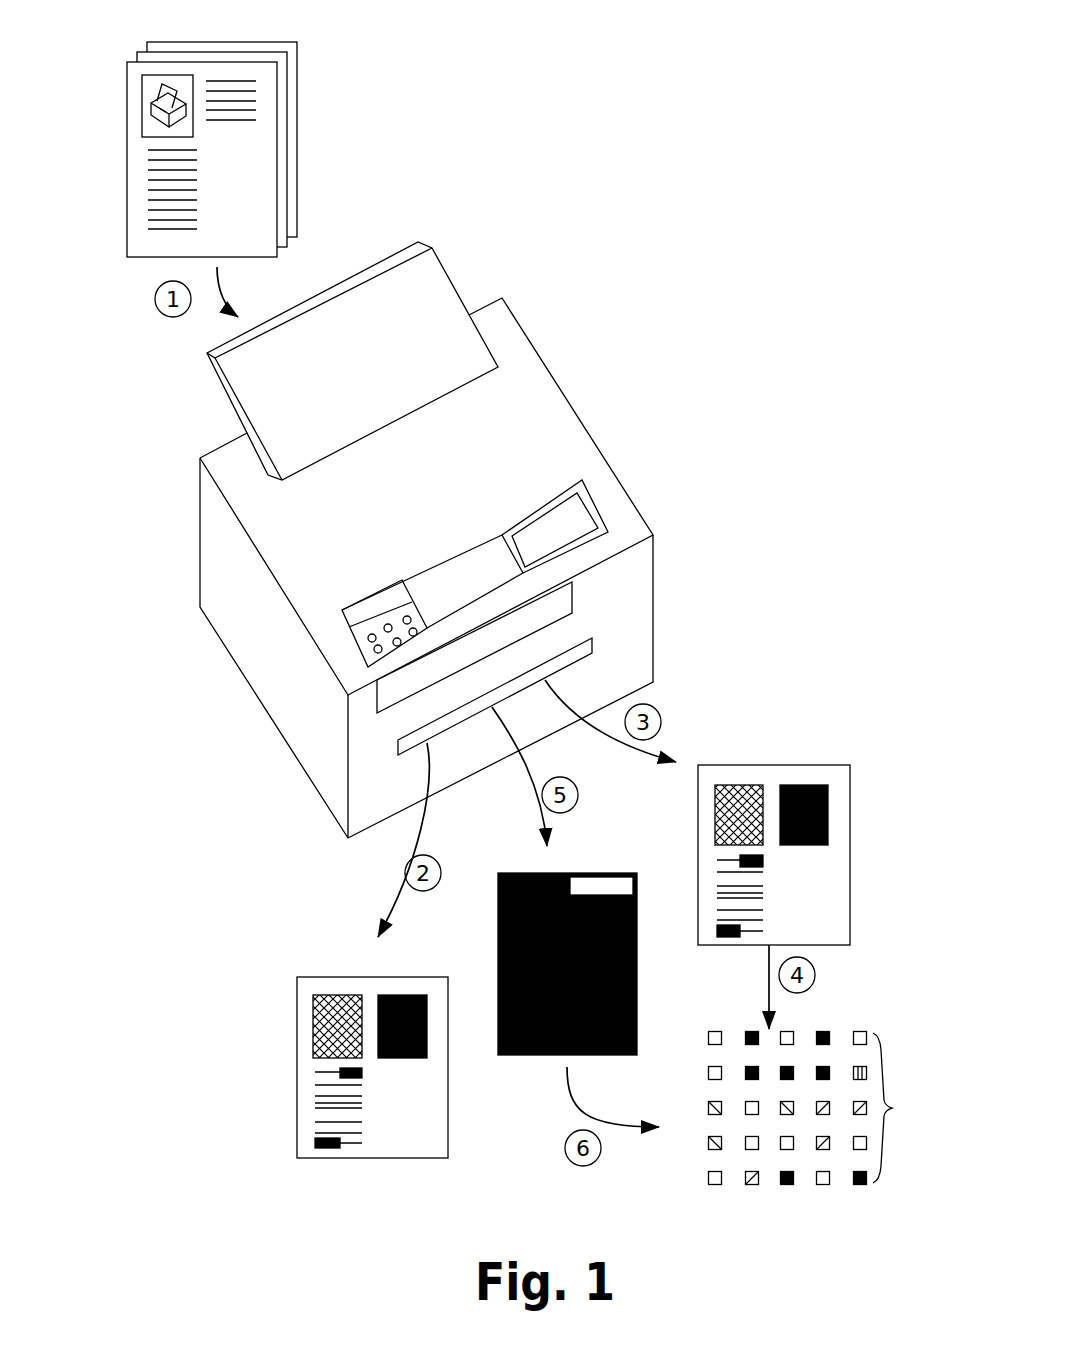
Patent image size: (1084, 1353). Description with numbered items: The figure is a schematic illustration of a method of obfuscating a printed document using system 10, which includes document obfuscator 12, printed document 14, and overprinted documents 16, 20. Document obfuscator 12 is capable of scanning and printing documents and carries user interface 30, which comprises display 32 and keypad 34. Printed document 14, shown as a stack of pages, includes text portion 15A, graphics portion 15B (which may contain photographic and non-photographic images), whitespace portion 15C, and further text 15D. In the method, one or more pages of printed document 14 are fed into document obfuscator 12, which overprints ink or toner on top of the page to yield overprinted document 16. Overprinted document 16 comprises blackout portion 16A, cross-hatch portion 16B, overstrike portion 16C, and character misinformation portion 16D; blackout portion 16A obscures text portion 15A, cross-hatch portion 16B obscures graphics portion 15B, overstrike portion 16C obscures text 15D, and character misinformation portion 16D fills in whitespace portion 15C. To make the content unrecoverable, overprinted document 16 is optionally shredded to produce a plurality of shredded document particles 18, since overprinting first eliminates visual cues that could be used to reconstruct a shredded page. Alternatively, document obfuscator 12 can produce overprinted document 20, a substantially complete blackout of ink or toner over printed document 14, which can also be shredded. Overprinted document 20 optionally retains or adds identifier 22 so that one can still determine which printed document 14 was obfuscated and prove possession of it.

The system 10 is at (440, 540).
The document obfuscator 12 is at (553, 370).
The printed document 14 is at (277, 150).
The text portion 15A is at (237, 87).
The graphics portion 15B is at (162, 82).
The whitespace portion 15C is at (240, 193).
The text 15D is at (155, 193).
The overprinted document 16 is at (571, 954).
The blackout portion 16A is at (315, 1022).
The cross-hatch portion 16B is at (315, 1103).
The overstrike portion 16C is at (715, 885).
The character misinformation portion 16D is at (383, 1133).
The shredded document particles 18 is at (825, 1108).
The overprinted document 20 is at (575, 937).
The identifier 22 is at (618, 882).
The user interface 30 is at (597, 493).
The display 32 is at (562, 493).
The keypad 34 is at (357, 643).